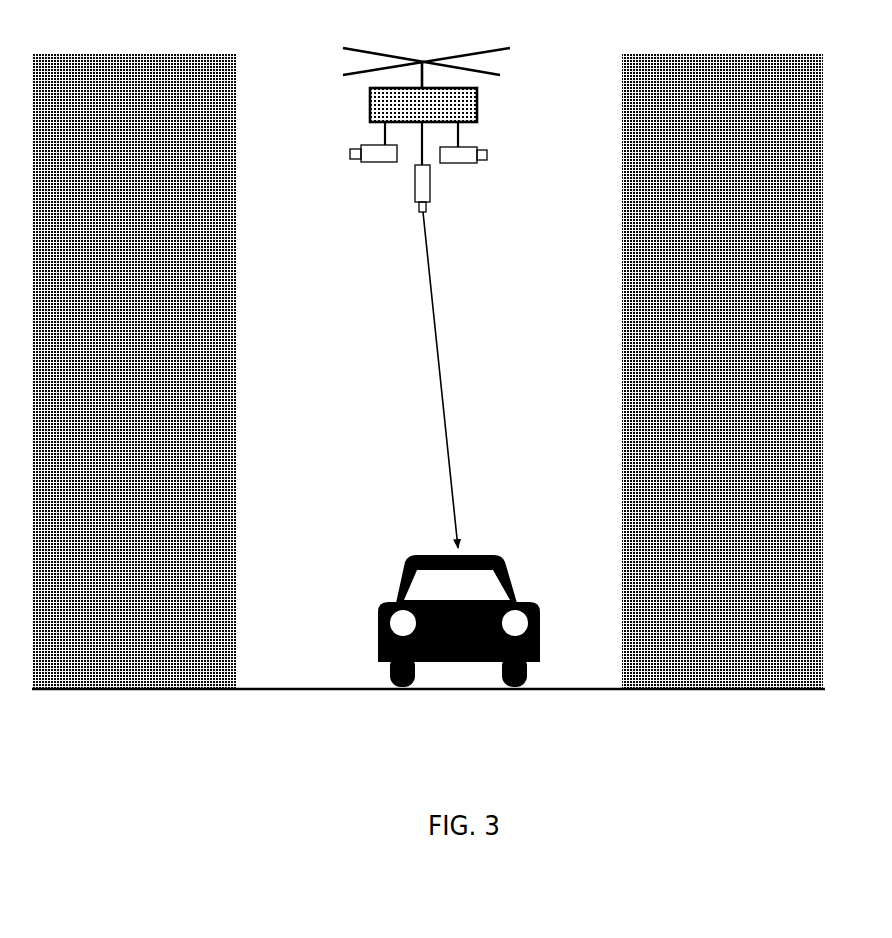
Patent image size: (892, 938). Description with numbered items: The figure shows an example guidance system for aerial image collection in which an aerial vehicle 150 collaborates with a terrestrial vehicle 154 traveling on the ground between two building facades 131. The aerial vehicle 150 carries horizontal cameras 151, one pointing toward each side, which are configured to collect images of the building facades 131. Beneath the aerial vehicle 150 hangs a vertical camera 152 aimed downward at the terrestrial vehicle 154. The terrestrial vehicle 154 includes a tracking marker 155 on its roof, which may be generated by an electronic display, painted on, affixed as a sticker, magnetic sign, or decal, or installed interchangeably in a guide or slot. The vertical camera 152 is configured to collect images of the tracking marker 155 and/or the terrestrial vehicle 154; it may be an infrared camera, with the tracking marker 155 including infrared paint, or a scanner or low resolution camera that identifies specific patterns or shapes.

The building facades 131 is at (135, 54).
The aerial vehicle 150 is at (477, 104).
The horizontal cameras 151 is at (363, 147).
The vertical camera 152 is at (430, 182).
The terrestrial vehicle 154 is at (429, 604).
The tracking marker 155 is at (490, 555).